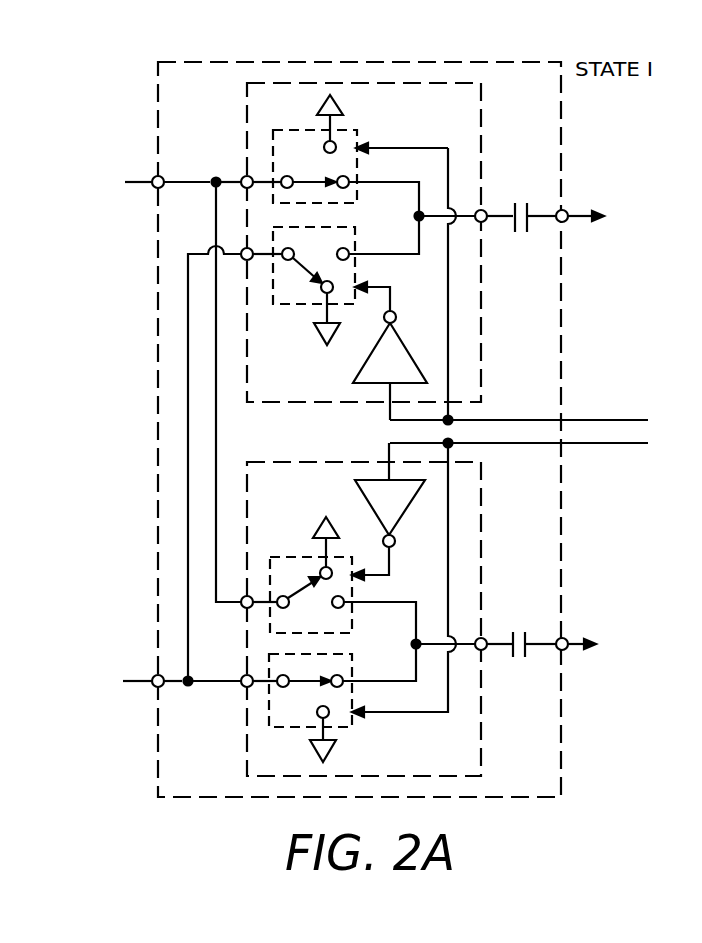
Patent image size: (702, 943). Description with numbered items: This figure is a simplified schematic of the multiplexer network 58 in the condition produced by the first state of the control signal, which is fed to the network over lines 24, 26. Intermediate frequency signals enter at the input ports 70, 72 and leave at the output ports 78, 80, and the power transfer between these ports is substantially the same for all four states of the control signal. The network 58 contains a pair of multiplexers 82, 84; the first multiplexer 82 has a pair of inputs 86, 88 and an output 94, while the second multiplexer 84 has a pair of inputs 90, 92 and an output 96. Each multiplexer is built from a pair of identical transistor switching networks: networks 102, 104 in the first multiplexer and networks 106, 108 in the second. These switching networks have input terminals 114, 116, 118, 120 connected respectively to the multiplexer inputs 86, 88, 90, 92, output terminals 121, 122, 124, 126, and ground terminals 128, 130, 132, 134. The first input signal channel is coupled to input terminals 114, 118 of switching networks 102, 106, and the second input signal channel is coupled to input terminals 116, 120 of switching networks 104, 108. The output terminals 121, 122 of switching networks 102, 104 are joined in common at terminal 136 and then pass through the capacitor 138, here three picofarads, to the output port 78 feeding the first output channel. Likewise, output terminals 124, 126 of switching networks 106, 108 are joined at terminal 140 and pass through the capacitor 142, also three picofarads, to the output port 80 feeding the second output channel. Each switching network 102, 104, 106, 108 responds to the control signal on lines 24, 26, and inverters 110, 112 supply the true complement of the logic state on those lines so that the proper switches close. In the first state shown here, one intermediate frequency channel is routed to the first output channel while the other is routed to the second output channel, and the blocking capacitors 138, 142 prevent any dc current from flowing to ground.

The line 24 is at (577, 418).
The line 26 is at (573, 445).
The multiplexer network 58 is at (158, 108).
The input port 70 is at (152, 177).
The input port 72 is at (152, 677).
The output port 78 is at (572, 208).
The output port 80 is at (567, 640).
The multiplexer 82 is at (483, 140).
The multiplexer 84 is at (483, 570).
The input 86 is at (242, 177).
The input 88 is at (241, 250).
The input 90 is at (243, 607).
The input 92 is at (243, 687).
The output 94 is at (485, 225).
The output 96 is at (484, 637).
The transistor switching network 102 is at (340, 203).
The transistor switching network 104 is at (340, 224).
The transistor switching network 106 is at (352, 633).
The transistor switching network 108 is at (352, 728).
The inverter 110 is at (369, 357).
The inverter 112 is at (367, 505).
The input terminal 114 is at (291, 175).
The input terminal 116 is at (290, 262).
The input terminal 118 is at (282, 594).
The input terminal 120 is at (270, 677).
The output terminal 121 is at (350, 176).
The output terminal 122 is at (352, 262).
The output terminal 124 is at (355, 600).
The output terminal 126 is at (346, 678).
The ground terminal 128 is at (338, 146).
The ground terminal 130 is at (321, 294).
The ground terminal 132 is at (320, 566).
The ground terminal 134 is at (317, 718).
The terminal 136 is at (421, 221).
The capacitor 138 is at (528, 207).
The terminal 140 is at (419, 649).
The capacitor 142 is at (533, 657).